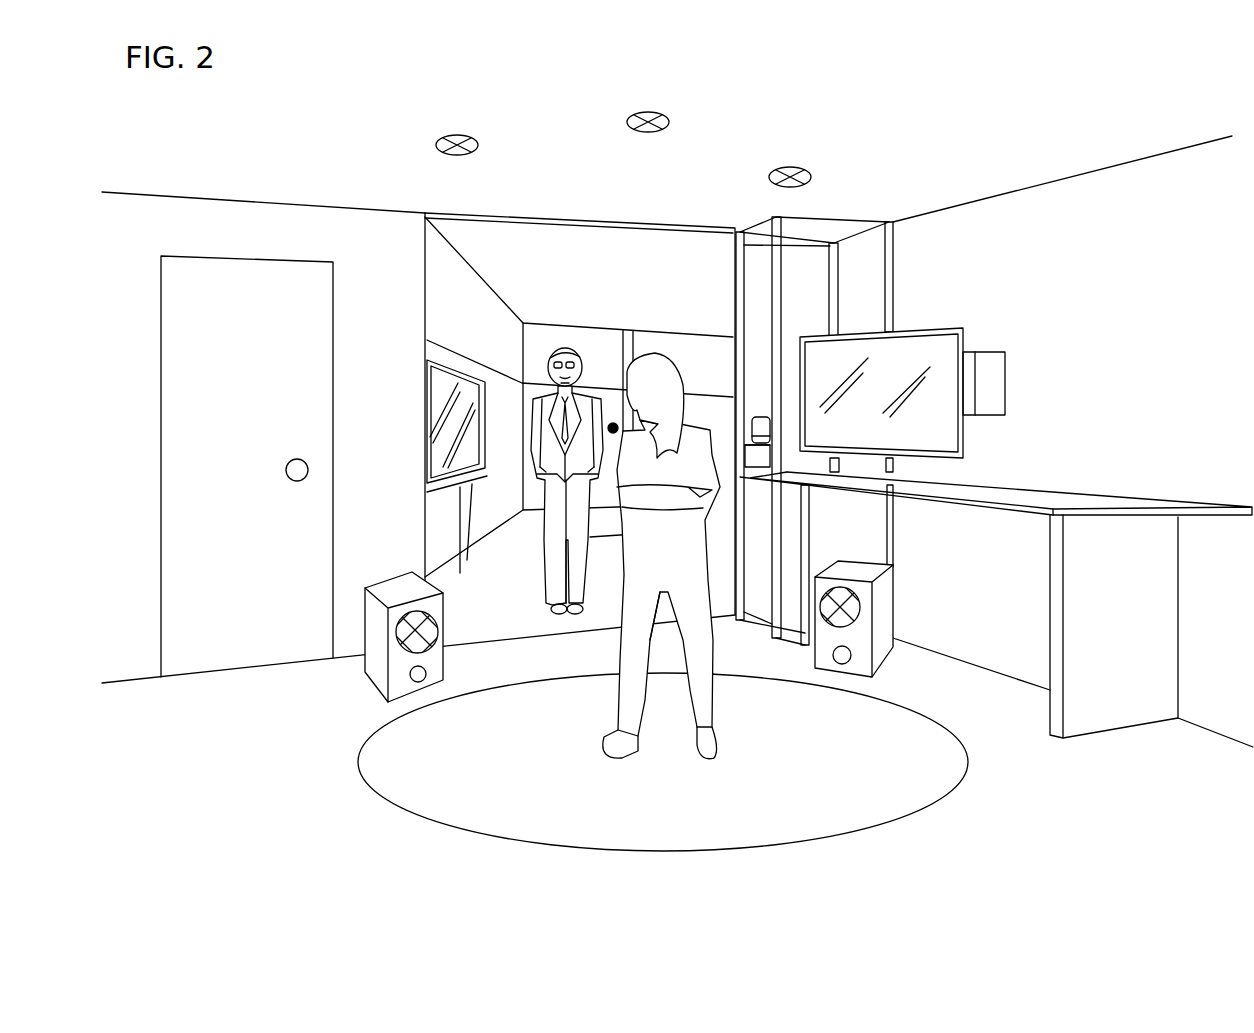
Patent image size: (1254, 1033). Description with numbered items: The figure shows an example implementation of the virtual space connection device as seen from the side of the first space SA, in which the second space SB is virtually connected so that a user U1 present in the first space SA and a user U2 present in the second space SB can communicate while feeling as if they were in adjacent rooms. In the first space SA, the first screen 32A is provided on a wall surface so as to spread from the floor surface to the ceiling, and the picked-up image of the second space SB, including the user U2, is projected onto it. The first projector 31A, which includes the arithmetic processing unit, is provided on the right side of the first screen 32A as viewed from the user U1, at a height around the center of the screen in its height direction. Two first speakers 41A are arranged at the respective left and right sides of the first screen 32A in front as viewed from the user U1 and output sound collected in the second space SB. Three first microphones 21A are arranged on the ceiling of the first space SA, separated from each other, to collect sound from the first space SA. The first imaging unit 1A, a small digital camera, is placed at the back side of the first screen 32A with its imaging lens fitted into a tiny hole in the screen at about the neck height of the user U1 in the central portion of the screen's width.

The first imaging unit 1A is at (612, 423).
The first microphones 21A is at (453, 137).
The first projector 31A is at (757, 420).
The first screen 32A is at (463, 290).
The first speakers 41A is at (397, 660).
The first space SA is at (352, 824).
The second space SB is at (440, 300).
The user U1 is at (672, 360).
The user U2 is at (563, 347).